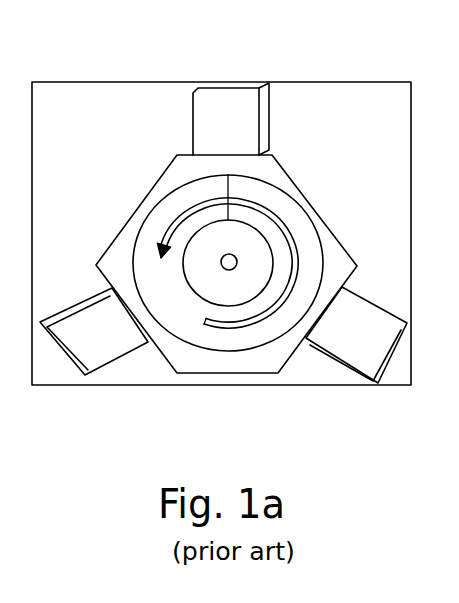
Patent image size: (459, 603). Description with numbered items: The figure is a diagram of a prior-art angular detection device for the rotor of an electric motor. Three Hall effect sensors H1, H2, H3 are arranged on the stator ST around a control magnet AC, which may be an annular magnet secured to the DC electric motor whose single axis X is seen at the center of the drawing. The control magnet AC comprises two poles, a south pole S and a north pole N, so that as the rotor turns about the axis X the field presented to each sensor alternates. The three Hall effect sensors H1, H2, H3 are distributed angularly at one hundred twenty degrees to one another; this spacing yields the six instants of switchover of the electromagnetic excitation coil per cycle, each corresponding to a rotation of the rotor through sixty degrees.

The Hall effect sensor H1 is at (228, 103).
The Hall effect sensor H2 is at (358, 348).
The Hall effect sensor H3 is at (102, 350).
The stator ST is at (307, 103).
The south pole S is at (275, 233).
The north pole N is at (152, 270).
The control magnet AC is at (165, 212).
The axis X is at (231, 267).